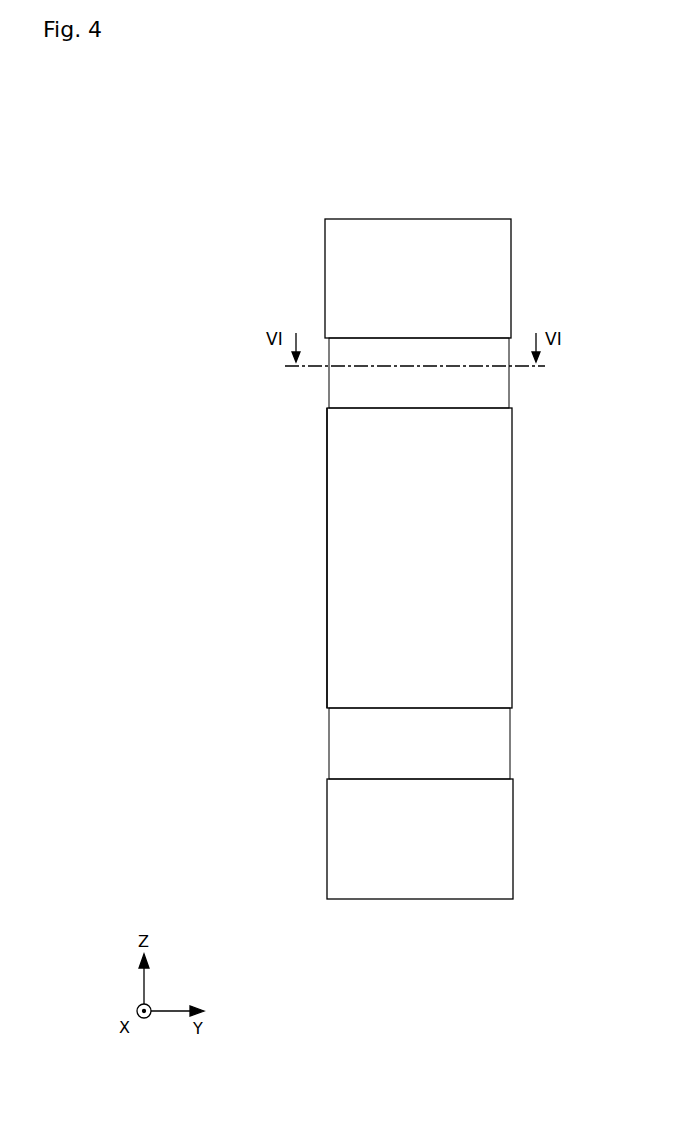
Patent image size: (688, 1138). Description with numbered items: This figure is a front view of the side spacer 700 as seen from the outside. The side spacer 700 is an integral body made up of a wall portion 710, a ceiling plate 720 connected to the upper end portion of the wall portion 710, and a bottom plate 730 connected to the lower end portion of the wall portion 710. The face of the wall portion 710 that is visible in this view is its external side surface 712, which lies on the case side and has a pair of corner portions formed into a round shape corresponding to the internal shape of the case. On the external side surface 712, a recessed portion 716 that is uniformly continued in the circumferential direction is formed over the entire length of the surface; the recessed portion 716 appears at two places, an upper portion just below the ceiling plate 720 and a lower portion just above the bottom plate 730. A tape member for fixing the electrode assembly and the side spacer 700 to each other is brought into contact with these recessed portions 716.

The side spacer 700 is at (392, 184).
The wall portion 710 is at (512, 549).
The external side surface 712 is at (340, 685).
The recessed portion 716 is at (494, 399).
The ceiling plate 720 is at (443, 218).
The bottom plate 730 is at (466, 900).